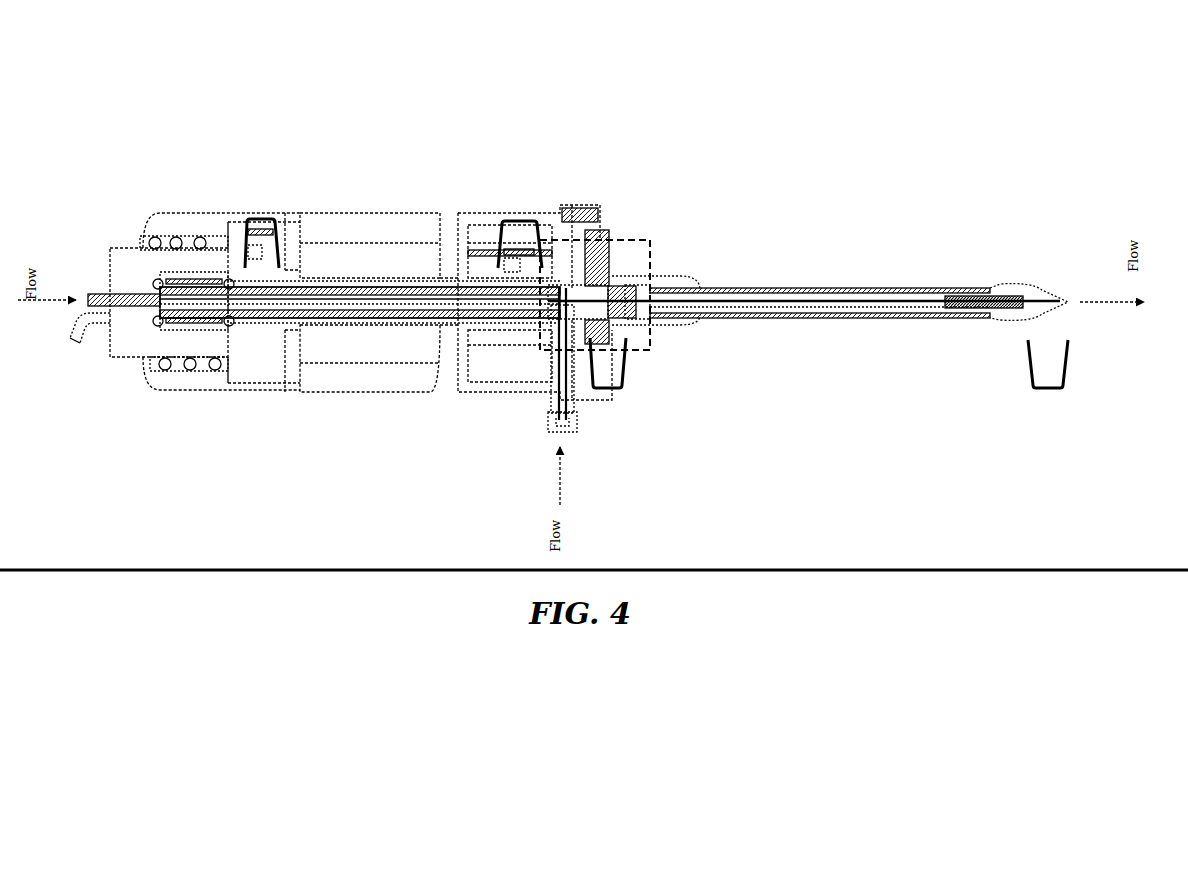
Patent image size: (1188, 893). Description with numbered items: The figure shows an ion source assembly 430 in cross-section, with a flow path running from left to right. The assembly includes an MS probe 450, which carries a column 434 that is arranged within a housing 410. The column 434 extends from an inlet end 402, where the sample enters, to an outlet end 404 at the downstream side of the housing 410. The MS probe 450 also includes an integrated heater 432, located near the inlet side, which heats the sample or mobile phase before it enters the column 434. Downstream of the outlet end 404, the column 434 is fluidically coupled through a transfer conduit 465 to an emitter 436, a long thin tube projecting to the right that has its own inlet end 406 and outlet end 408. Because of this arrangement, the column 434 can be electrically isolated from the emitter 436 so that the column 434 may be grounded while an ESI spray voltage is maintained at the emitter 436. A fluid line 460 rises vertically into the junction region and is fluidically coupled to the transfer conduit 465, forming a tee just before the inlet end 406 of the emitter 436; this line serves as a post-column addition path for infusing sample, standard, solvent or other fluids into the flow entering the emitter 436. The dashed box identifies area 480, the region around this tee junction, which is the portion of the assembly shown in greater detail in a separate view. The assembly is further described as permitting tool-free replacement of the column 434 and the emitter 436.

The ion source assembly 430 is at (763, 235).
The MS probe 450 is at (220, 198).
The column 434 is at (371, 288).
The inlet end 402 is at (260, 219).
The outlet end 404 is at (518, 221).
The housing 410 is at (556, 204).
The transfer conduit 465 is at (572, 296).
The emitter 436 is at (761, 296).
The heater 432 is at (180, 336).
The fluid line 460 is at (544, 404).
The inlet end 406 is at (608, 388).
The area 480 is at (656, 351).
The outlet end 408 is at (1048, 388).